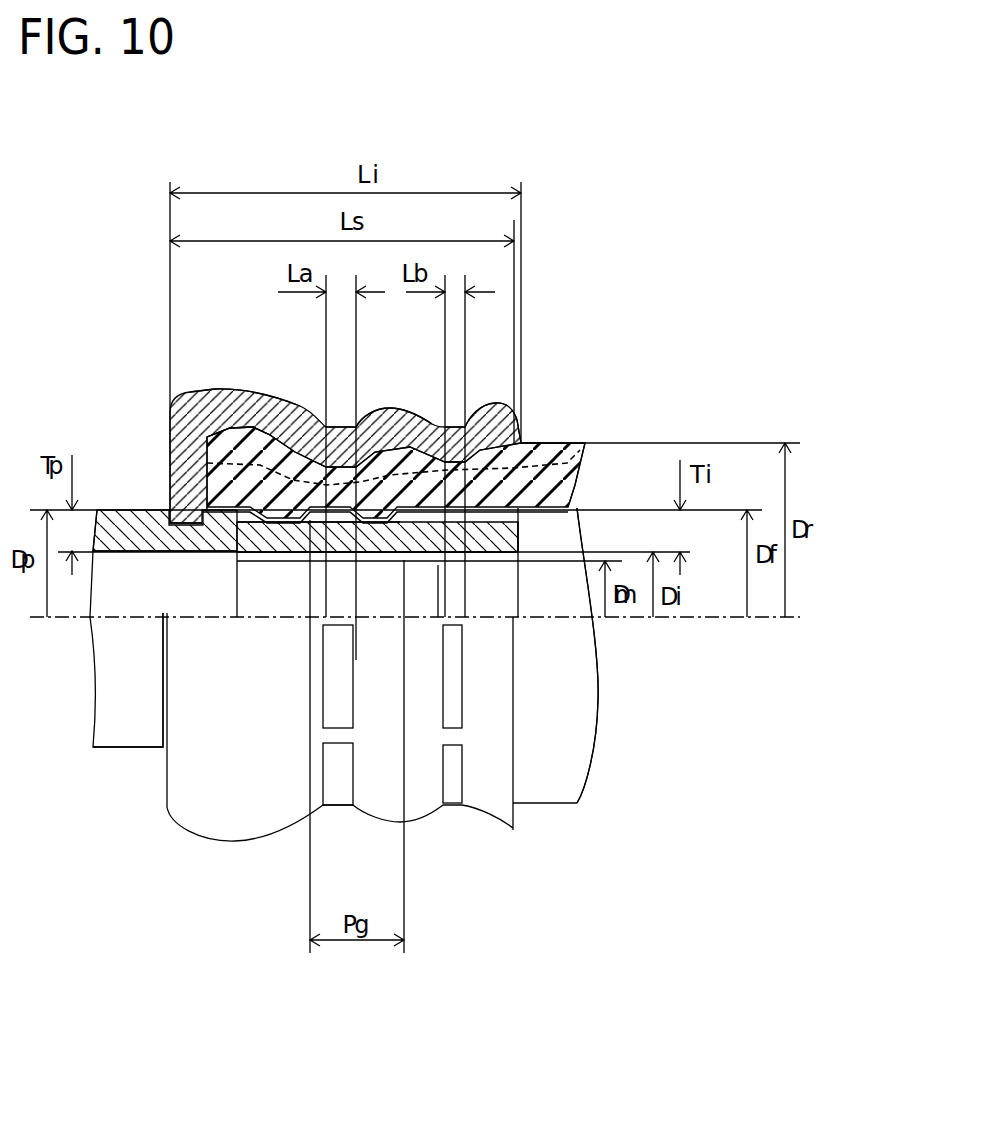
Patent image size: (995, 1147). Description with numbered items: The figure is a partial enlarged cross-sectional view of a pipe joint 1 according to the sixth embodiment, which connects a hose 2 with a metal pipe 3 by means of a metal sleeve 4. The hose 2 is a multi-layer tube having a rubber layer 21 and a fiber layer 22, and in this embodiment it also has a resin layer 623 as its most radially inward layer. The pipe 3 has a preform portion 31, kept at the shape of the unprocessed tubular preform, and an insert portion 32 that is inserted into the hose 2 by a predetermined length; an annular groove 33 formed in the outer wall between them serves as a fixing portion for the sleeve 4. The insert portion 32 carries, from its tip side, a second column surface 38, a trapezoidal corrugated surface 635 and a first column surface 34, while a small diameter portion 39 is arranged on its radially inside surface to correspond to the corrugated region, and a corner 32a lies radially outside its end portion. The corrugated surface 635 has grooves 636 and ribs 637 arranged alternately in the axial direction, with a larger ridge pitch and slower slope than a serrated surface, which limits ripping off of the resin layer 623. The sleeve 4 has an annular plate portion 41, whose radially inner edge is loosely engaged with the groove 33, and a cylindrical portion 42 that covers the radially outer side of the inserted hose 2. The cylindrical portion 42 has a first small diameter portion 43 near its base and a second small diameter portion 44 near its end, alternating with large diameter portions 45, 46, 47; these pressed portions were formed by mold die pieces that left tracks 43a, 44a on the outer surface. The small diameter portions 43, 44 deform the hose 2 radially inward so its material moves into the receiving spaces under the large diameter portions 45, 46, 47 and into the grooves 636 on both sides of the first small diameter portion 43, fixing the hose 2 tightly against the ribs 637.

The pipe joint 1 is at (559, 262).
The hose 2 is at (532, 443).
The rubber layer 21 is at (557, 443).
The fiber layer 22 is at (580, 450).
The resin layer 623 is at (570, 492).
The pipe 3 is at (142, 748).
The preform portion 31 is at (133, 533).
The insert portion 32 is at (215, 560).
The corner 32a is at (450, 553).
The annular groove 33 is at (175, 552).
The first column surface 34 is at (240, 548).
The second column surface 38 is at (432, 553).
The small diameter portion 39 is at (420, 560).
The sleeve 4 is at (173, 413).
The annular plate portion 41 is at (170, 447).
The cylindrical portion 42 is at (215, 390).
The first small diameter portion 43 is at (323, 402).
The track 43a is at (337, 777).
The second small diameter portion 44 is at (439, 405).
The track 44a is at (452, 777).
The large diameter portion 45 is at (224, 410).
The large diameter portion 46 is at (390, 402).
The large diameter portion 47 is at (484, 403).
The trapezoidal corrugated surface 635 is at (270, 553).
The groove 636 is at (287, 553).
The rib 637 is at (305, 553).